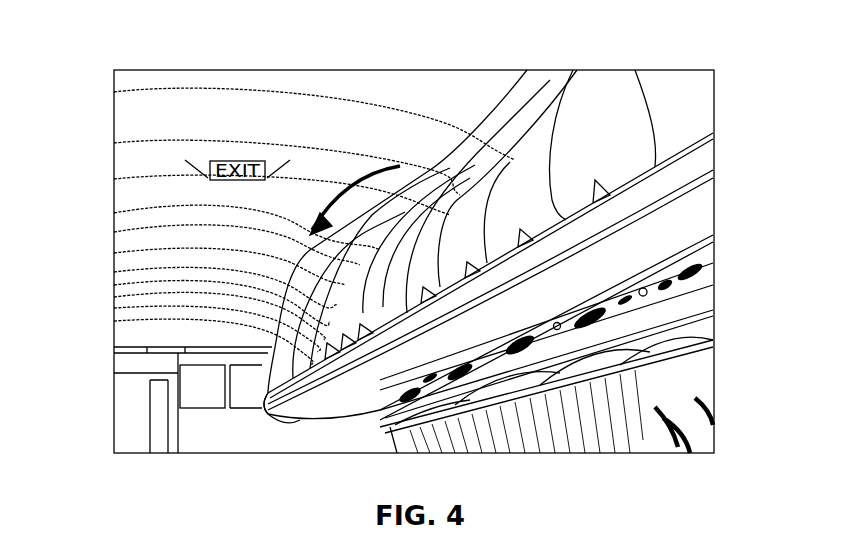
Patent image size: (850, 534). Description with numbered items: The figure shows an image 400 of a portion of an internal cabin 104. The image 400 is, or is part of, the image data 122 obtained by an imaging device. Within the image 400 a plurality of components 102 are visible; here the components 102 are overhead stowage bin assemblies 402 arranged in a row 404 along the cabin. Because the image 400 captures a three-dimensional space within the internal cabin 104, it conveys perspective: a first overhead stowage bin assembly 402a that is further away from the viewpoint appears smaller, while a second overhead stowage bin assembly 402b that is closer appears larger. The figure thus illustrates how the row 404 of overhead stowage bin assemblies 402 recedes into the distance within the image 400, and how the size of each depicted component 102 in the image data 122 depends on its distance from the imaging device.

The image 400 is at (100, 104).
The image data 122 is at (205, 62).
The overhead stowage bin assembly 402 is at (405, 160).
The first overhead stowage bin assembly 402a is at (267, 383).
The second overhead stowage bin assembly 402b is at (588, 95).
The components 102 is at (645, 92).
The internal cabin 104 is at (719, 166).
The row 404 is at (719, 94).